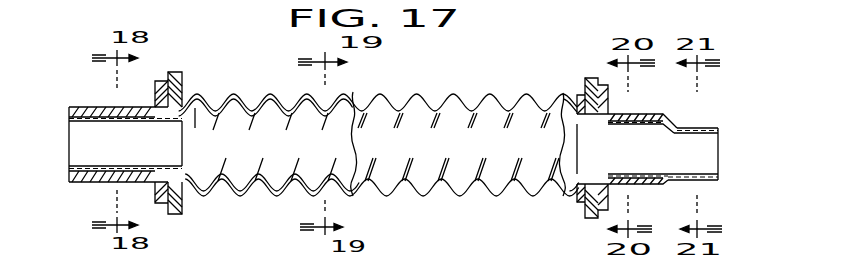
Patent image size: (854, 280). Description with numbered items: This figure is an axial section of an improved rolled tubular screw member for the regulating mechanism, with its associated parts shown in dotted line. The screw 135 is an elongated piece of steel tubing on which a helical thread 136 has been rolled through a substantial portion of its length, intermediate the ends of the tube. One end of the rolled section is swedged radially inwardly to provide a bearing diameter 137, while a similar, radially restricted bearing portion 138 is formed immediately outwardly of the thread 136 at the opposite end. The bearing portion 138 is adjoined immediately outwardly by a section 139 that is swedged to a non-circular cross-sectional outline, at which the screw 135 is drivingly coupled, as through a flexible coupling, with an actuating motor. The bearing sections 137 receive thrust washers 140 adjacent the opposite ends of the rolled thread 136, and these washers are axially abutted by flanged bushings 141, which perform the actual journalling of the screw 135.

The screw 135 is at (437, 88).
The helical thread 136 is at (294, 196).
The bearing diameter 137 is at (110, 165).
The bearing portion 138 is at (636, 124).
The section 139 is at (690, 128).
The thrust washer 140 is at (182, 80).
The flanged bushing 141 is at (86, 182).